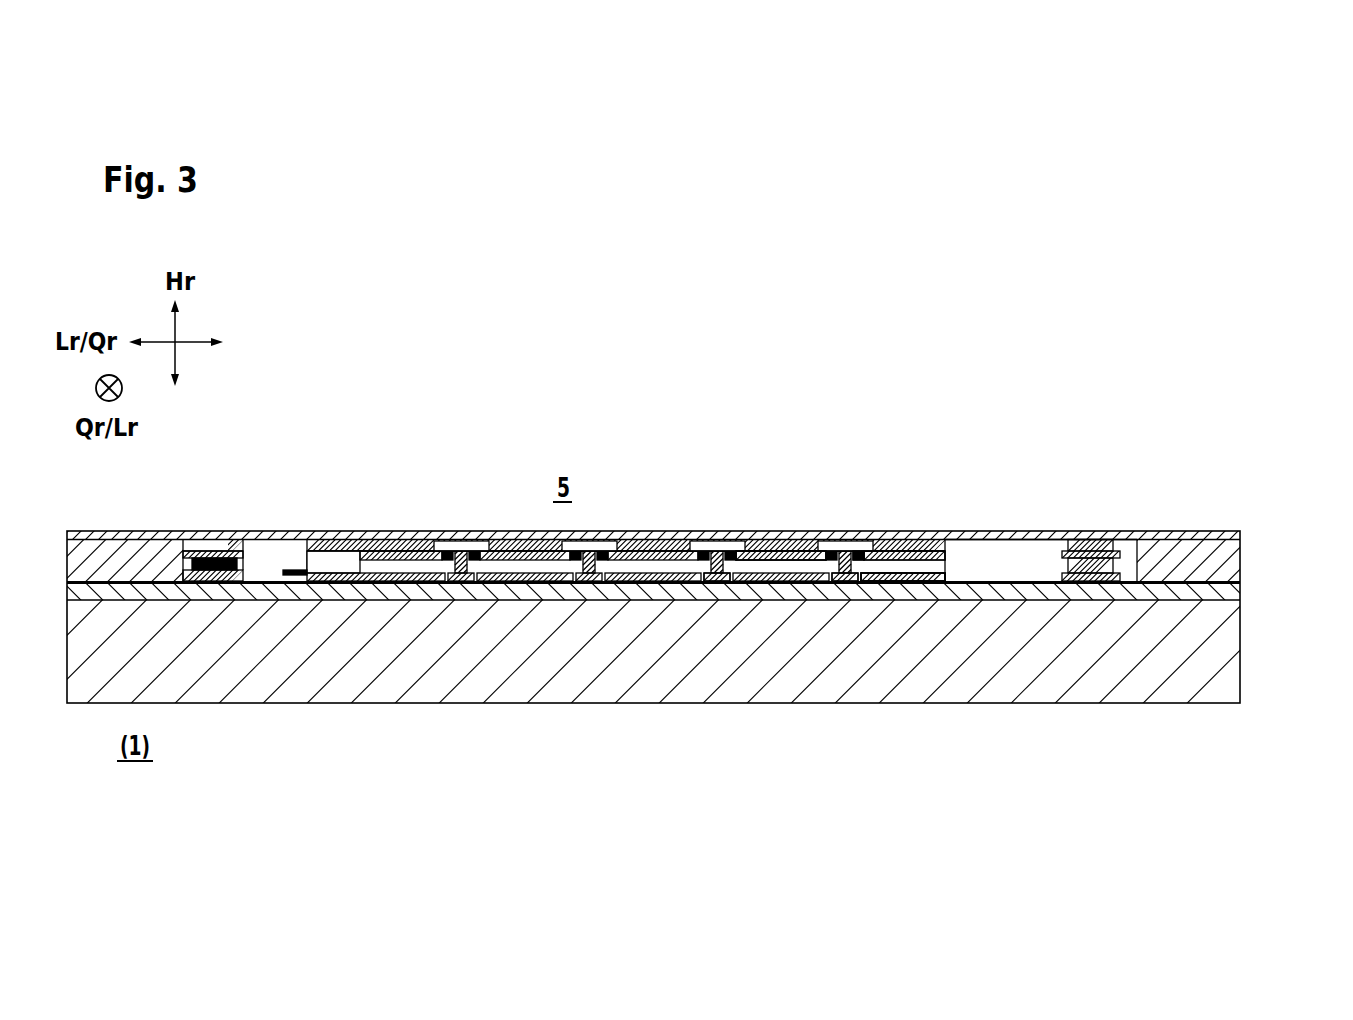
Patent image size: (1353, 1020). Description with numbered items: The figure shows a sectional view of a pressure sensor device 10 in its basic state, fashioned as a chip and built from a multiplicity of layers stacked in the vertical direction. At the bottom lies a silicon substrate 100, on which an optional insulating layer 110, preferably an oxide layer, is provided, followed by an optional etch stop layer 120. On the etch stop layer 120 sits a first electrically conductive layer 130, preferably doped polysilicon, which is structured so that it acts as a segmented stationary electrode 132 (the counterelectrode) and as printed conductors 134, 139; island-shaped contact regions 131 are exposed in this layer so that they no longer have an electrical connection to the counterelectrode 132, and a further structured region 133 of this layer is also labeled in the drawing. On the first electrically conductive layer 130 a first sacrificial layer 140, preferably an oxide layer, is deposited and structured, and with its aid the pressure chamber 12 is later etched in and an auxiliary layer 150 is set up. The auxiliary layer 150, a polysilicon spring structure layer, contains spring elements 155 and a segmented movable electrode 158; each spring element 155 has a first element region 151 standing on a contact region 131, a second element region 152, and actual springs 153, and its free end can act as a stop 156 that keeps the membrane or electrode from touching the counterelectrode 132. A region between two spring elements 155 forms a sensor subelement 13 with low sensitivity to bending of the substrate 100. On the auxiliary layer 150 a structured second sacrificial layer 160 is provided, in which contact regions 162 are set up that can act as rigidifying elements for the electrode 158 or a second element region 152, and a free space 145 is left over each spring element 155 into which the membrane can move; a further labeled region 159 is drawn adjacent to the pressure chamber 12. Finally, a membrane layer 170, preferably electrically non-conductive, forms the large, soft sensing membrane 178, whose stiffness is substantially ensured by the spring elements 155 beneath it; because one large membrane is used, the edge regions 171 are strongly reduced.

The pressure sensor device 10 is at (348, 436).
The pressure chamber 12 is at (278, 552).
The sensor subelement 13 is at (413, 583).
The substrate 100 is at (1245, 664).
The insulating layer 110 is at (1245, 593).
The etch stop layer 120 is at (1245, 582).
The first electrically conductive layer 130 is at (952, 571).
The contact region 131 is at (721, 584).
The segmented stationary electrode 132 is at (908, 584).
The conductor 133 is at (858, 584).
The printed conductor 134 is at (347, 582).
The printed conductor 139 is at (292, 582).
The first sacrificial layer 140 is at (1245, 563).
The free space 145 is at (722, 545).
The auxiliary layer 150 is at (836, 570).
The first element region 151 is at (845, 577).
The second element region 152 is at (803, 555).
The spring 153 is at (860, 548).
The spring element 155 is at (847, 538).
The stop 156 is at (712, 548).
The segmented movable electrode 158 is at (645, 552).
The recess 159 is at (343, 550).
The second sacrificial layer 160 is at (952, 543).
The contact region 162 is at (787, 553).
The membrane layer 170 is at (1245, 535).
The edge region 171 is at (1058, 530).
The sensing membrane 178 is at (500, 538).